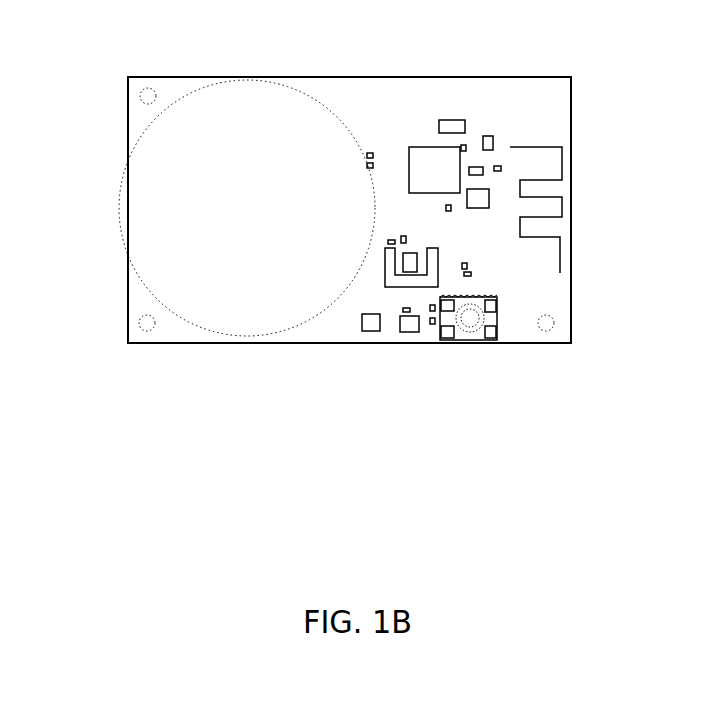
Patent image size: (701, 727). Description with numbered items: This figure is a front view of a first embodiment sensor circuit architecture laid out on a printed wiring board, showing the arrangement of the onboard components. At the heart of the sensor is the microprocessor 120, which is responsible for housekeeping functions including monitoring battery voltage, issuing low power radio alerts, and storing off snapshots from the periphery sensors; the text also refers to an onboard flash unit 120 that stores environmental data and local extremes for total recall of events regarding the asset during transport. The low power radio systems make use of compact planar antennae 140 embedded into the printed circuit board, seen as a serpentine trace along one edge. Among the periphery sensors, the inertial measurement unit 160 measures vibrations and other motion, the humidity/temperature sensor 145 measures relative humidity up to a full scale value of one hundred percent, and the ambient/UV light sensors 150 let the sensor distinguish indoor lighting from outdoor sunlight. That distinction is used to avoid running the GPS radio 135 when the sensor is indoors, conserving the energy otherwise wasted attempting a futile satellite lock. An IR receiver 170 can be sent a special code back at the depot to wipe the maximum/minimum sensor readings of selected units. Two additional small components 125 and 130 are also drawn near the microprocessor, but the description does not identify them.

The microprocessor 120 is at (432, 168).
The component 125 is at (446, 124).
The component 130 is at (486, 137).
The GPS radio 135 is at (487, 198).
The planar antennae 140 is at (540, 206).
The humidity/temperature sensor 145 is at (385, 267).
The ambient/UV light sensors 150 is at (410, 325).
The inertial measurement unit 160 is at (368, 322).
The IR receiver 170 is at (467, 318).